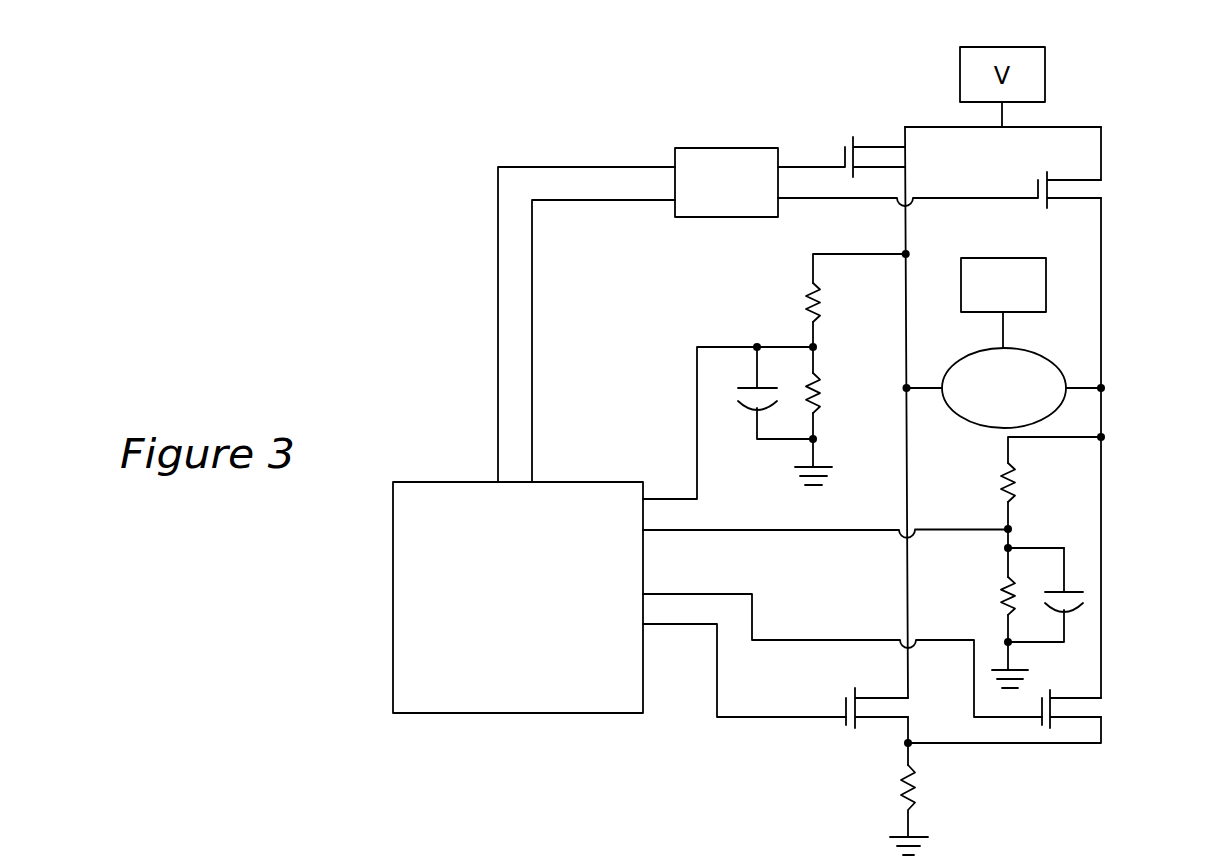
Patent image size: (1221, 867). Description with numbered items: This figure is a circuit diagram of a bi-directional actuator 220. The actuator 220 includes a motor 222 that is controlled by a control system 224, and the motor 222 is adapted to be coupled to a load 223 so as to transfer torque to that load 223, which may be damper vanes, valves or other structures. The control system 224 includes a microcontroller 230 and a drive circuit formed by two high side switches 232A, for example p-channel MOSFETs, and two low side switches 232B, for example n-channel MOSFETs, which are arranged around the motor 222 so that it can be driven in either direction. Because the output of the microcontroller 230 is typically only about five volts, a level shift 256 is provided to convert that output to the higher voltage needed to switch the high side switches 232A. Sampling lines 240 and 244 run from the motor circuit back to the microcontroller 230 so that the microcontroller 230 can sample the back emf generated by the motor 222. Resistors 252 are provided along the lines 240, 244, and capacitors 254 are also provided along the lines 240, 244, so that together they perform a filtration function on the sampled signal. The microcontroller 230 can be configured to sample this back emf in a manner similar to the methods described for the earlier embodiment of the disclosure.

The bi-directional actuator 220 is at (543, 135).
The motor 222 is at (1043, 355).
The load 223 is at (1007, 258).
The control system 224 is at (665, 725).
The microcontroller 230 is at (508, 713).
The high side switches 232A is at (848, 132).
The low side switches 232B is at (843, 728).
The line 240 is at (717, 345).
The line 244 is at (778, 532).
The resistors 252 is at (813, 287).
The capacitors 254 is at (743, 382).
The level shift 256 is at (727, 148).